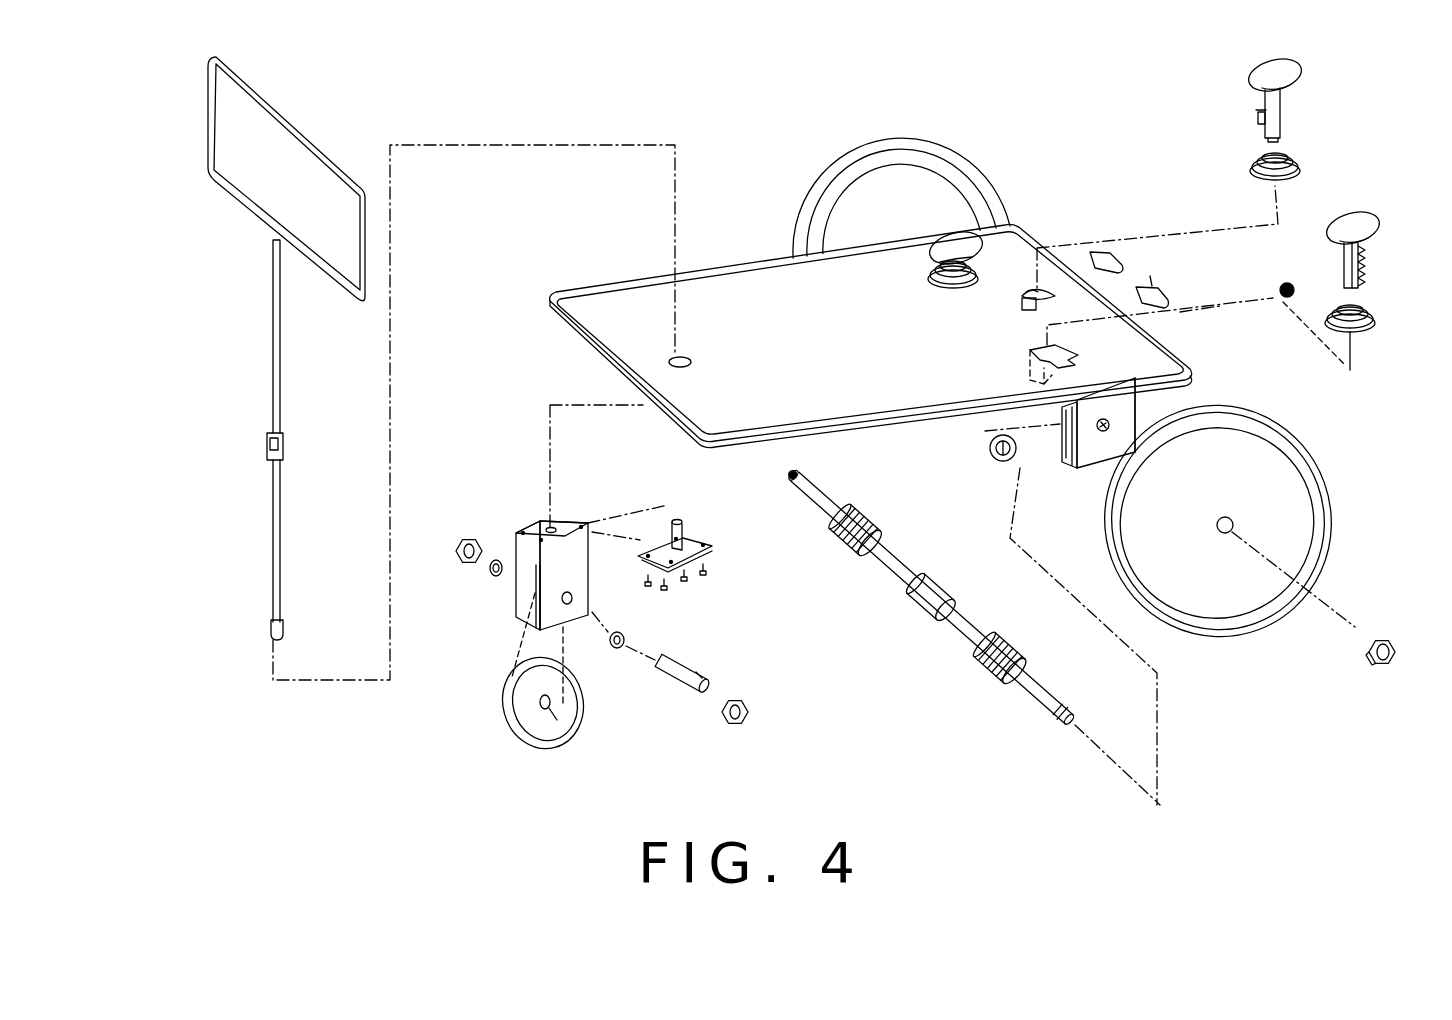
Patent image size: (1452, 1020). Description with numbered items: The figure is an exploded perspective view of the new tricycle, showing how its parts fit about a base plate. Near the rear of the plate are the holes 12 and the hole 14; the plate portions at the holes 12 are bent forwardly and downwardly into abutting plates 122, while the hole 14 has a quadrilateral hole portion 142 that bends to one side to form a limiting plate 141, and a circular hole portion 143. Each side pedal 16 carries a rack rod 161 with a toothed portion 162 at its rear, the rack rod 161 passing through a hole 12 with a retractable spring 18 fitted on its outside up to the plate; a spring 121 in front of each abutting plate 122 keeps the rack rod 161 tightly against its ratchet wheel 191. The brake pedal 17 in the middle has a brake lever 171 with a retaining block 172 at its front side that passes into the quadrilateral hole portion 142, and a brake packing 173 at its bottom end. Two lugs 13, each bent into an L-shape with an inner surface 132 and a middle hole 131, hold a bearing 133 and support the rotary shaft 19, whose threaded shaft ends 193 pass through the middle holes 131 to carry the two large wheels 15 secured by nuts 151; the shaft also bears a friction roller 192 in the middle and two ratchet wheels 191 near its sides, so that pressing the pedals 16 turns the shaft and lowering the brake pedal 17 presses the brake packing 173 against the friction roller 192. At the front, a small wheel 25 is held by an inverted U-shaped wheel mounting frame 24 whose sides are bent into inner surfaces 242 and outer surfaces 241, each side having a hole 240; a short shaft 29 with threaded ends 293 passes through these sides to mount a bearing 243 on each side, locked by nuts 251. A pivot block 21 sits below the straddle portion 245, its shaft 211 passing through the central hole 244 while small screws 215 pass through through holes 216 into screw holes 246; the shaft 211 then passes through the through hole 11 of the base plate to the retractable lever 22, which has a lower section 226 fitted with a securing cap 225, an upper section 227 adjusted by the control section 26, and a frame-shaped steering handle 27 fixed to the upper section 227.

The through hole 11 is at (688, 360).
The hole 12 is at (1060, 356).
The spring 121 is at (1020, 365).
The abutting plate 122 is at (1282, 278).
The lug 13 is at (1092, 460).
The middle hole 131 is at (1128, 452).
The inner surface 132 is at (1066, 464).
The bearing 133 is at (992, 456).
The hole 14 is at (1030, 272).
The limiting plate 141 is at (1022, 302).
The quadrilateral hole portion 142 is at (1024, 292).
The circular hole portion 143 is at (1050, 294).
The large wheel 15 is at (893, 178).
The nut 151 is at (1368, 665).
The pedal 16 is at (1340, 224).
The rack rod 161 is at (1346, 254).
The toothed portion 162 is at (1364, 283).
The brake pedal 17 is at (970, 248).
The brake lever 171 is at (1285, 106).
The retaining block 172 is at (1258, 118).
The brake packing 173 is at (1283, 136).
The retractable spring 18 is at (938, 274).
The rotary shaft 19 is at (967, 630).
The ratchet wheel 191 is at (848, 555).
The friction roller 192 is at (930, 585).
The axle end 193 is at (792, 483).
The pivot block 21 is at (680, 580).
The shaft 211 is at (684, 523).
The small screw 215 is at (646, 582).
The through hole 216 is at (706, 542).
The retractable lever 22 is at (318, 420).
The securing cap 225 is at (270, 627).
The lower section 226 is at (282, 520).
The upper section 227 is at (273, 337).
The wheel mounting frame 24 is at (602, 602).
The bracket hole 240 is at (568, 610).
The outer surface 241 is at (535, 628).
The inner surface 242 is at (525, 587).
The bearing 243 is at (490, 572).
The central hole 244 is at (553, 525).
The straddle portion 245 is at (540, 520).
The screw hole 246 is at (583, 523).
The small wheel 25 is at (531, 728).
The nut 251 is at (460, 545).
The control section 26 is at (268, 451).
The steering handle 27 is at (208, 104).
The short shaft 29 is at (1118, 262).
The threaded end 293 is at (702, 692).